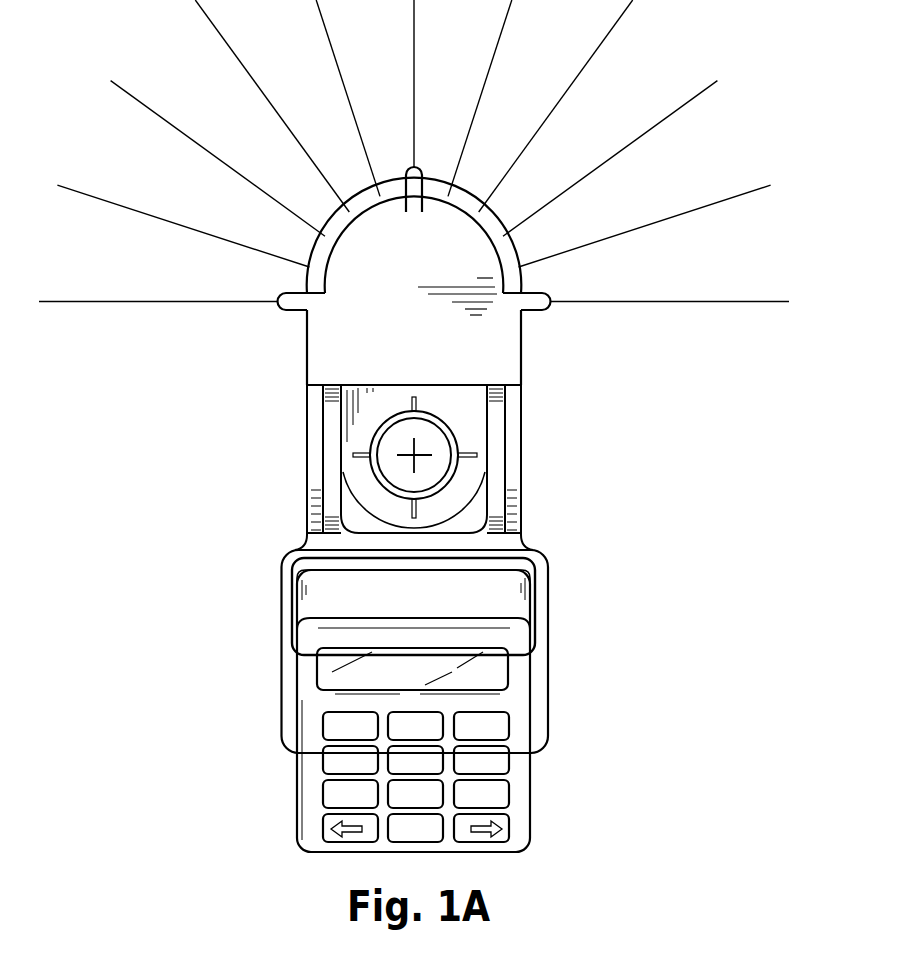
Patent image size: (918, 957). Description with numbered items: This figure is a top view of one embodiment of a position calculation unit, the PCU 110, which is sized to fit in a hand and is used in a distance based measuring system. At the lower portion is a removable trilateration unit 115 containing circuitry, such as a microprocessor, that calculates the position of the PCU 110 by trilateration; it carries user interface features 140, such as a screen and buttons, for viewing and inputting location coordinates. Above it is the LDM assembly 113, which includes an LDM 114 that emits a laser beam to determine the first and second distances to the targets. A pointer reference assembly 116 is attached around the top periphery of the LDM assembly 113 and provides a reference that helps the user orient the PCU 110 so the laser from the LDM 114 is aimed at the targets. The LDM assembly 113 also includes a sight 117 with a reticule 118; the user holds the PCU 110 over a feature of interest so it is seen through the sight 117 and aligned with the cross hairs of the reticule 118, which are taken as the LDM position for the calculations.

The position calculation unit 110 is at (248, 648).
The LDM assembly 113 is at (298, 493).
The LDM 114 is at (339, 222).
The trilateration unit 115 is at (314, 855).
The pointer reference assembly 116 is at (422, 272).
The sight 117 is at (459, 427).
The reticule 118 is at (416, 457).
The user interface features 140 is at (490, 660).